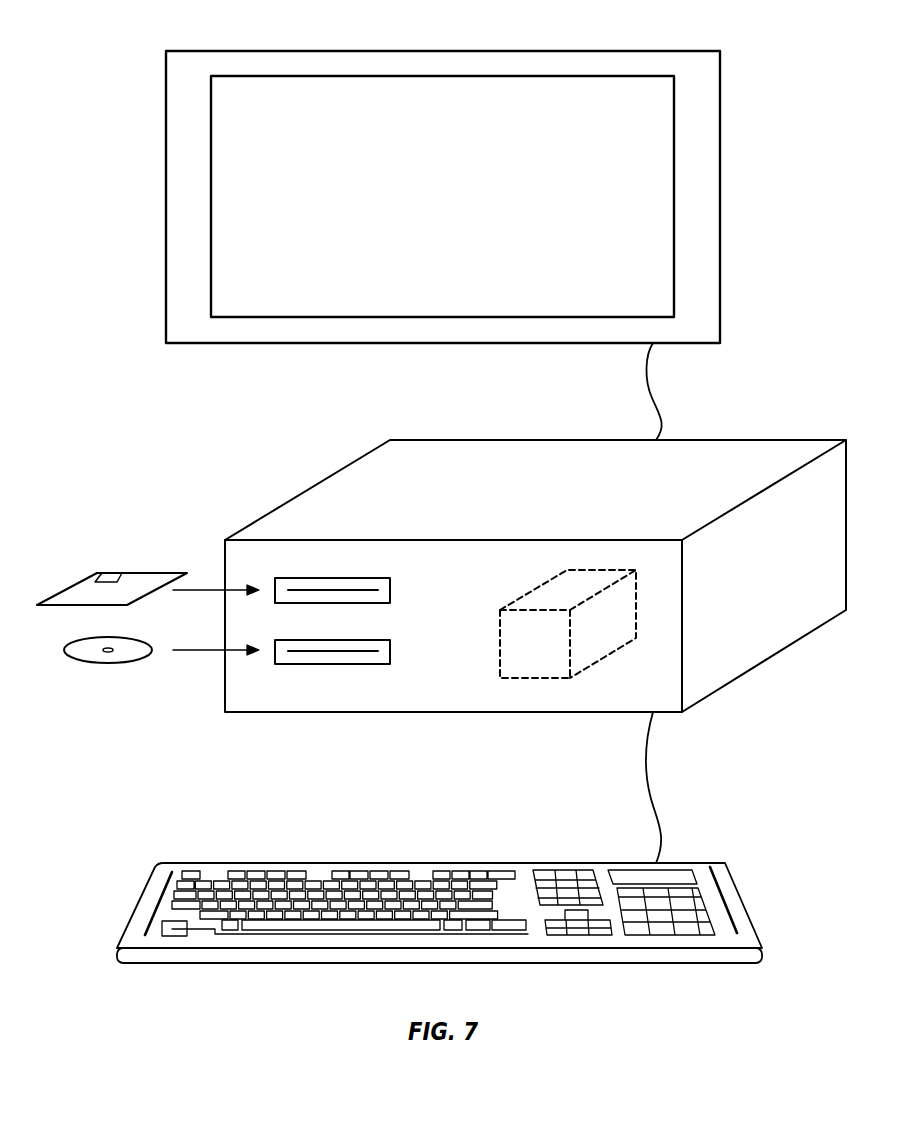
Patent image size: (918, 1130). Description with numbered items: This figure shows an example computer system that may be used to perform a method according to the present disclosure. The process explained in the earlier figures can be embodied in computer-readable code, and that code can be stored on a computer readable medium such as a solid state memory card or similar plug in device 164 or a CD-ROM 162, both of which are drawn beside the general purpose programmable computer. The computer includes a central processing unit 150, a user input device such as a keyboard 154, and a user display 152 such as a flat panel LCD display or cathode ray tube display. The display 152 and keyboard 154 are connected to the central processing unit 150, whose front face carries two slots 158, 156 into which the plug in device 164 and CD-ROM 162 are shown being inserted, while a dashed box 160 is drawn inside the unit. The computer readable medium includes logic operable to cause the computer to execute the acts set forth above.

The central processing unit 150 is at (777, 440).
The user display 152 is at (660, 50).
The keyboard 154 is at (700, 863).
The disk drive 156 is at (353, 640).
The disk drive 158 is at (353, 578).
The internal storage / memory 160 is at (500, 615).
The CD-ROM 162 is at (140, 640).
The solid state memory card or similar plug in device 164 is at (142, 572).